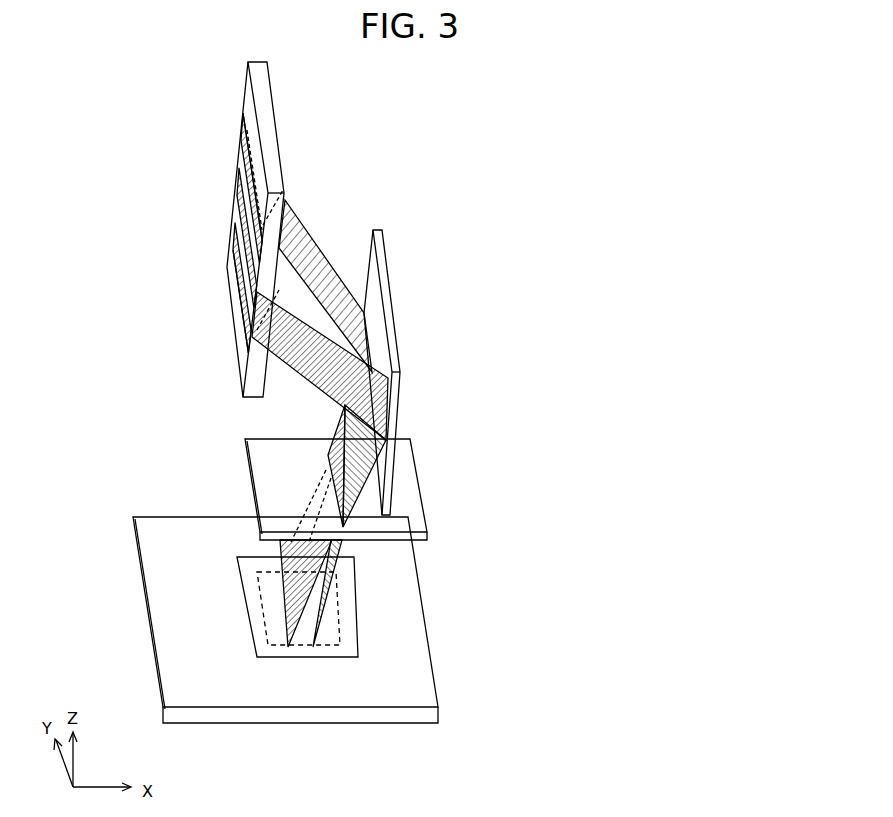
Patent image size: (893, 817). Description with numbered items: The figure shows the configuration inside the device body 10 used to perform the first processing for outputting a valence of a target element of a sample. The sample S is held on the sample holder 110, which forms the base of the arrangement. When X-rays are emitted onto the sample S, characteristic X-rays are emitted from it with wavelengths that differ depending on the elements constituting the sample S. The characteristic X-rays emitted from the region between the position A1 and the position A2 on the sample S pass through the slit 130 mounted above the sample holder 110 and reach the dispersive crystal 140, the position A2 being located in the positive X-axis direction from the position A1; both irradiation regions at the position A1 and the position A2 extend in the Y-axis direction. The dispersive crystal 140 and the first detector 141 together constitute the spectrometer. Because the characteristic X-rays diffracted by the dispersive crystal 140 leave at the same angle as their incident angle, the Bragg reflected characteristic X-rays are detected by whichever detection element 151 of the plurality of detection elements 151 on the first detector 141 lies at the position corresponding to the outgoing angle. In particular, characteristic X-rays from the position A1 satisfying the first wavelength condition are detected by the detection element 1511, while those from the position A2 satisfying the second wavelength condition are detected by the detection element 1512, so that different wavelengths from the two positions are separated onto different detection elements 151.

The device body 10 is at (536, 558).
The sample holder 110 is at (410, 652).
The slit 130 is at (325, 441).
The dispersive crystal 140 is at (398, 349).
The first detector 141 is at (271, 137).
The detection element 151 is at (240, 178).
The detection element 1511 is at (237, 257).
The detection element 1512 is at (243, 136).
The sample S is at (350, 615).
The position A1 is at (278, 608).
The position A2 is at (308, 627).